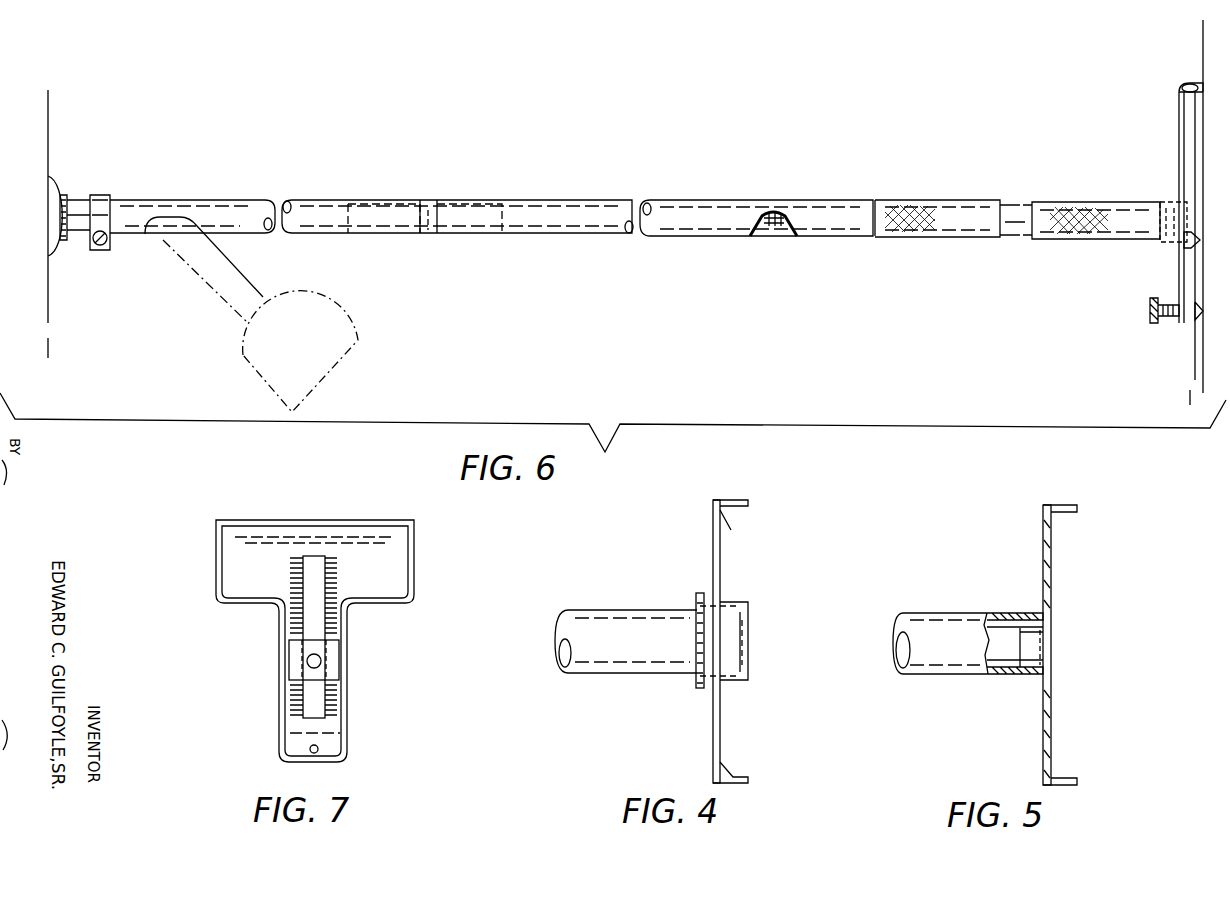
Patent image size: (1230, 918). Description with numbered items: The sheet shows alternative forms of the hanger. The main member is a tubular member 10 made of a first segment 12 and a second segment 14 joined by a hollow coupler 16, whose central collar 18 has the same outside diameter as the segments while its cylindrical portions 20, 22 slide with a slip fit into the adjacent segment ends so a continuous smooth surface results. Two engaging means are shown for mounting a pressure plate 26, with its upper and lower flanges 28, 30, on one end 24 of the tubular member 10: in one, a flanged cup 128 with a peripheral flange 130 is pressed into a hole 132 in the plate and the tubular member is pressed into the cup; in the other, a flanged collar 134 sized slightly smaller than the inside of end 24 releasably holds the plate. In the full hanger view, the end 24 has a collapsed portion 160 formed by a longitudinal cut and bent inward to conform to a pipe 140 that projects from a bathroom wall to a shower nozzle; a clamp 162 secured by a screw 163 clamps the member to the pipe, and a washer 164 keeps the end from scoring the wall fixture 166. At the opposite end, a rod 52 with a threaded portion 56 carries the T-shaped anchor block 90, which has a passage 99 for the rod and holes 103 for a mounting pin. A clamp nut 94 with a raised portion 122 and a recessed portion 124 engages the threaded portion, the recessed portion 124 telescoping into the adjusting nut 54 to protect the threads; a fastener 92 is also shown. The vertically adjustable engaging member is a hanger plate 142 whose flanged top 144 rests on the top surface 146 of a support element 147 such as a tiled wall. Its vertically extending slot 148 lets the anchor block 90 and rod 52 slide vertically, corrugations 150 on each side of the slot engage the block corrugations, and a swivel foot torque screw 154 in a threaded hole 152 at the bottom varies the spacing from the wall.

In FIG. 6, the tubular member 10 is at (537, 197).
In FIG. 4, the tubular member 10 is at (598, 607).
In FIG. 5, the tubular member 10 is at (933, 611).
In FIG. 6, the first segment 12 is at (660, 205).
In FIG. 6, the second segment 14 is at (294, 205).
In FIG. 4, the second segment 14 is at (592, 676).
In FIG. 5, the second segment 14 is at (932, 676).
In FIG. 6, the hollow coupler 16 is at (428, 197).
In FIG. 6, the central collar 18 is at (428, 235).
In FIG. 6, the cylindrical portion 20 is at (482, 235).
In FIG. 6, the cylindrical portion 22 is at (383, 235).
In FIG. 6, the end of tubular member 24 is at (72, 232).
In FIG. 4, the end of tubular member 24 is at (744, 622).
In FIG. 5, the end of tubular member 24 is at (1044, 676).
In FIG. 4, the pressure plate 26 is at (708, 733).
In FIG. 5, the pressure plate 26 is at (1066, 700).
In FIG. 4, the upper flange 28 is at (737, 499).
In FIG. 5, the upper flange 28 is at (1065, 505).
In FIG. 4, the lower flange 30 is at (748, 787).
In FIG. 5, the lower flange 30 is at (1060, 790).
In FIG. 6, the rod 52 is at (774, 238).
In FIG. 6, the adjusting nut 54 is at (948, 196).
In FIG. 6, the threaded portion 56 is at (752, 228).
In FIG. 6, the anchor block 90 is at (1192, 241).
In FIG. 7, the anchor block 90 is at (332, 668).
In FIG. 6, the fastener 92 is at (1166, 248).
In FIG. 6, the clamp nut 94 is at (1080, 238).
In FIG. 7, the passage 99 is at (306, 660).
In FIG. 6, the holes 103 is at (1170, 200).
In FIG. 6, the raised portion 122 is at (1048, 201).
In FIG. 6, the recessed portion 124 is at (1013, 237).
In FIG. 4, the flanged cup 128 is at (752, 596).
In FIG. 4, the peripheral flange 130 is at (700, 592).
In FIG. 4, the hole 132 is at (717, 660).
In FIG. 5, the flanged collar 134 is at (1032, 640).
In FIG. 6, the pipe 140 is at (190, 266).
In FIG. 6, the hanger plate 142 is at (1176, 110).
In FIG. 7, the hanger plate 142 is at (395, 565).
In FIG. 6, the flanged top 144 is at (1186, 83).
In FIG. 7, the flanged top 144 is at (262, 519).
In FIG. 6, the top surface 146 is at (1178, 90).
In FIG. 6, the support element 147 is at (1200, 145).
In FIG. 7, the vertically extending slot 148 is at (312, 566).
In FIG. 7, the corrugations 150 is at (292, 622).
In FIG. 7, the threaded hole 152 is at (320, 749).
In FIG. 6, the swivel foot torque screw 154 is at (1153, 324).
In FIG. 6, the collapsed portion 160 is at (147, 220).
In FIG. 6, the clamp 162 is at (105, 196).
In FIG. 6, the screw 163 is at (97, 248).
In FIG. 6, the washer 164 is at (70, 196).
In FIG. 6, the wall fixture 166 is at (54, 178).